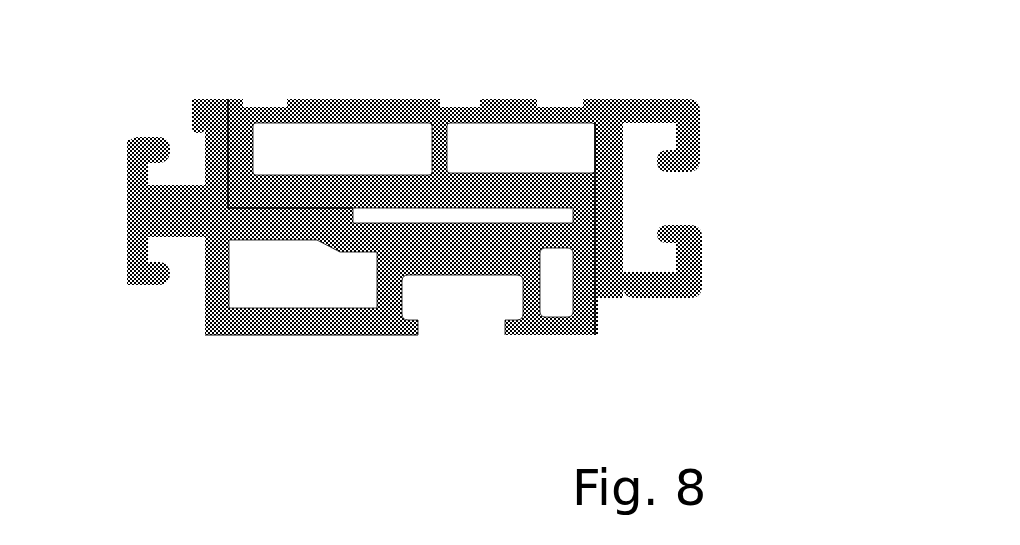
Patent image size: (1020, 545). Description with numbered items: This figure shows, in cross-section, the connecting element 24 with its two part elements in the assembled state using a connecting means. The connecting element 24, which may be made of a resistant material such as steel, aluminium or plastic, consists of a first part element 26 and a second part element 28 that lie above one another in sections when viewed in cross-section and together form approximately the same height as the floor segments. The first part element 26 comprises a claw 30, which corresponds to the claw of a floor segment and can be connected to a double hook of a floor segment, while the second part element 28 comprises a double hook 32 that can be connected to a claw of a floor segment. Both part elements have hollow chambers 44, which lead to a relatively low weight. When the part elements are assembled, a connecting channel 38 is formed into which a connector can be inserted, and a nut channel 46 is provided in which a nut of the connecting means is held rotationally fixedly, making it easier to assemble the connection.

The connecting element 24 is at (802, 147).
The first part element 26 is at (633, 112).
The second part element 28 is at (280, 313).
The claw 30 is at (665, 293).
The double hook 32 is at (135, 152).
The connecting channel 38 is at (538, 215).
The hollow chambers 44 is at (293, 143).
The nut channel 46 is at (445, 293).